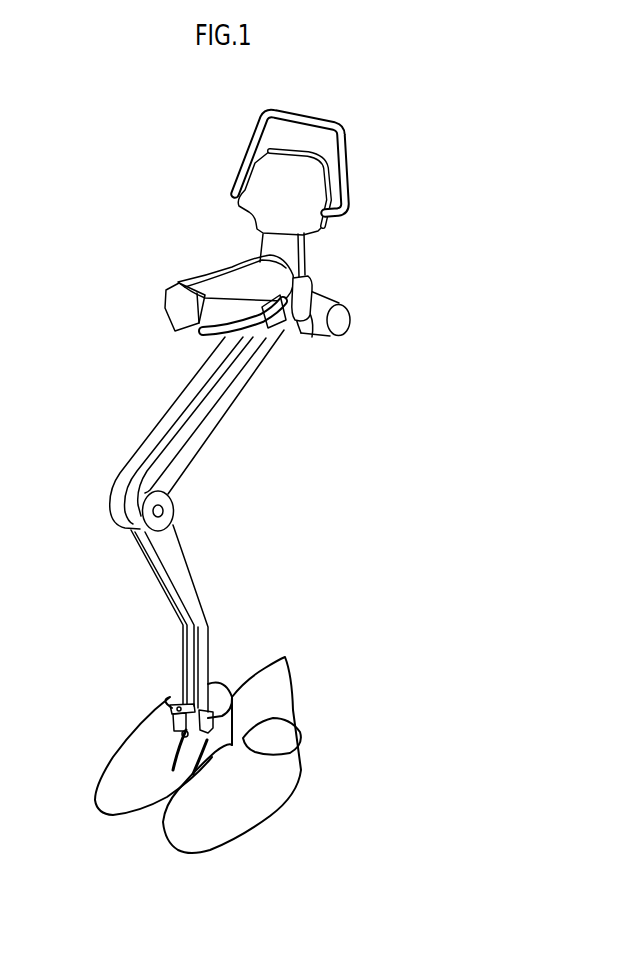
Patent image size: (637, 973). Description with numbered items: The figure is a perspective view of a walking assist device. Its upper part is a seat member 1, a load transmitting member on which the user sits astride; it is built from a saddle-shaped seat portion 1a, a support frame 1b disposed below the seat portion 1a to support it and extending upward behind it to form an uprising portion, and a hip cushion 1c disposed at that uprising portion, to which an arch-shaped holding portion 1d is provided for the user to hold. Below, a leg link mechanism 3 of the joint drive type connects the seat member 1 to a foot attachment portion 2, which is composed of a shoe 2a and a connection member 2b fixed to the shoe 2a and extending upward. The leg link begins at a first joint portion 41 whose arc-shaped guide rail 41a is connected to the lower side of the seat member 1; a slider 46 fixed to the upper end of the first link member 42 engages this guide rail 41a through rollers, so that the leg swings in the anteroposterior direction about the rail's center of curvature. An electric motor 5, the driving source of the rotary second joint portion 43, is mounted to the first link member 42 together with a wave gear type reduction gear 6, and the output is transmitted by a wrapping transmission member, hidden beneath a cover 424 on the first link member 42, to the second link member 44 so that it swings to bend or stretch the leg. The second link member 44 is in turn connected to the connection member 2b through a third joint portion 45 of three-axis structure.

The seat member 1 is at (177, 272).
The seat portion 1a is at (235, 270).
The support frame 1b is at (174, 298).
The hip cushion 1c is at (255, 170).
The holding portion 1d is at (303, 119).
The foot attachment portion 2 is at (150, 833).
The shoe 2a is at (285, 657).
The connection member 2b is at (195, 778).
The leg link mechanism 3 is at (177, 429).
The electric motor 5 is at (349, 320).
The reduction gear 6 is at (311, 282).
The first joint portion 41 is at (268, 328).
The guide rail 41a is at (208, 340).
The first link member 42 is at (240, 408).
The second joint portion 43 is at (130, 525).
The second link member 44 is at (197, 632).
The third joint portion 45 is at (188, 745).
The slider 46 is at (306, 310).
The cover 424 is at (137, 457).